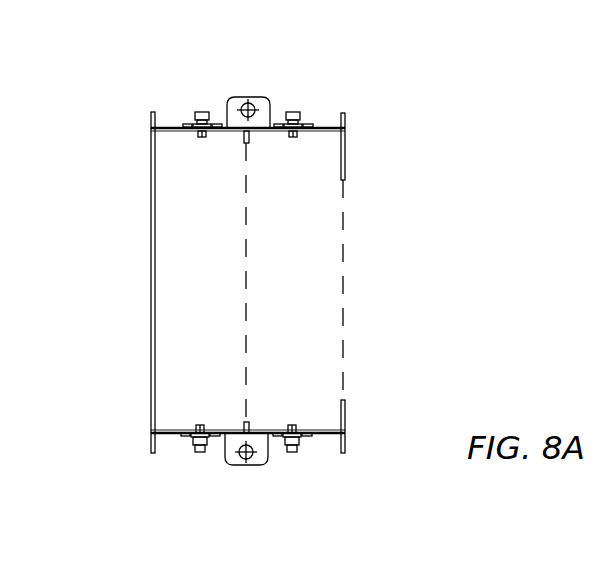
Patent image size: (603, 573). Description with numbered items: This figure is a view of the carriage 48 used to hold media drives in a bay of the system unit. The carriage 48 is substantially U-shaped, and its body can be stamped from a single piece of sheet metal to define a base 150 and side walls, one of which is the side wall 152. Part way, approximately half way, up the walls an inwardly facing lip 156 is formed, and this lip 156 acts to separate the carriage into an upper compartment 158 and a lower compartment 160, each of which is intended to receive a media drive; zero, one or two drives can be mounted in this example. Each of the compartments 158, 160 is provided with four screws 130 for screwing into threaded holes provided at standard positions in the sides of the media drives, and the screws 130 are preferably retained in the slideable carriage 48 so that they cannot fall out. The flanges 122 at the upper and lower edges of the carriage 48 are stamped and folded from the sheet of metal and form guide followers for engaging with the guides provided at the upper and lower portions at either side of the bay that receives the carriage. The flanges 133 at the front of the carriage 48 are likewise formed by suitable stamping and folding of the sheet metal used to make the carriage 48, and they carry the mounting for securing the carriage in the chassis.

The carriage 48 is at (121, 377).
The flanges 122 is at (150, 123).
The screws 130 is at (200, 112).
The flanges 133 is at (255, 100).
The base 150 is at (151, 293).
The side wall 152 is at (168, 127).
The inwardly facing lip 156 is at (249, 140).
The upper compartment 158 is at (320, 270).
The lower compartment 160 is at (180, 228).